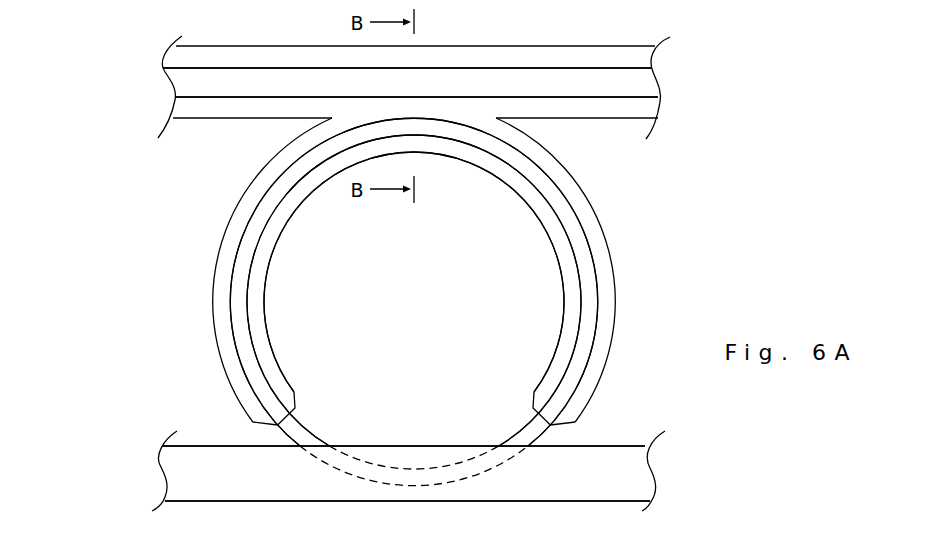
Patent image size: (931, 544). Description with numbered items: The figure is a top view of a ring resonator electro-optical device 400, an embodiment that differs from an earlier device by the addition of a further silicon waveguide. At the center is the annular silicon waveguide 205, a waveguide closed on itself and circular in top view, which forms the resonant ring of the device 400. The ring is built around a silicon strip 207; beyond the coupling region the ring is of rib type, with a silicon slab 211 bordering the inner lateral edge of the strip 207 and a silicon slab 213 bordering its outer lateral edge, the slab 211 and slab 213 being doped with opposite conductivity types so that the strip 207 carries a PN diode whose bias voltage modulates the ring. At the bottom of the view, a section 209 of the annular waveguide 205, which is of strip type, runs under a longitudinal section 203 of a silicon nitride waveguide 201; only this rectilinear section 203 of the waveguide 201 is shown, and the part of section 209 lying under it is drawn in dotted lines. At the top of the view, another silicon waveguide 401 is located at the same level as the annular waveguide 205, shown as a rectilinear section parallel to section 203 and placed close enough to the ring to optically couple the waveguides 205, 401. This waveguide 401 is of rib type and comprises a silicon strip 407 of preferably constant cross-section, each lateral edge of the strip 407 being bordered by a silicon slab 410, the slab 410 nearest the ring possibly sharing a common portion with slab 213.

The ring resonator electro-optical device 400 is at (116, 142).
The silicon waveguide 401 is at (680, 87).
The silicon strip 407 is at (528, 80).
The silicon slab 410 is at (598, 52).
The annular silicon waveguide 205 is at (206, 263).
The silicon strip 207 is at (580, 236).
The silicon slab 211 is at (565, 317).
The silicon slab 213 is at (600, 322).
The section 209 is at (500, 460).
The silicon nitride waveguide 201 is at (680, 470).
The longitudinal section 203 is at (573, 478).